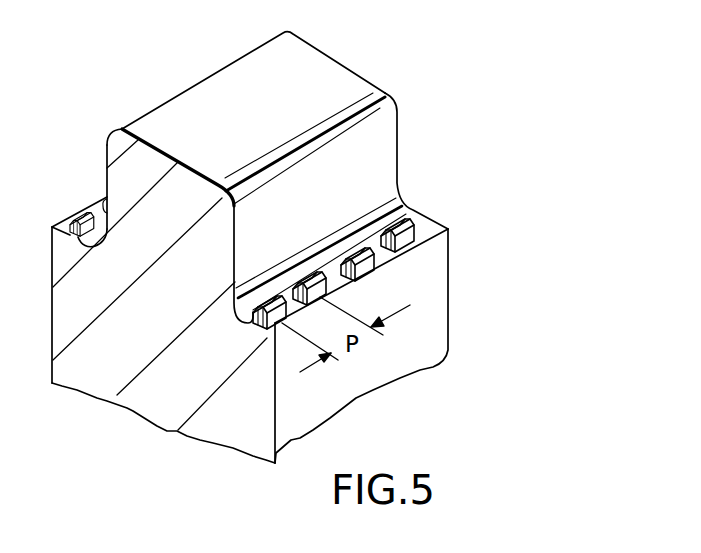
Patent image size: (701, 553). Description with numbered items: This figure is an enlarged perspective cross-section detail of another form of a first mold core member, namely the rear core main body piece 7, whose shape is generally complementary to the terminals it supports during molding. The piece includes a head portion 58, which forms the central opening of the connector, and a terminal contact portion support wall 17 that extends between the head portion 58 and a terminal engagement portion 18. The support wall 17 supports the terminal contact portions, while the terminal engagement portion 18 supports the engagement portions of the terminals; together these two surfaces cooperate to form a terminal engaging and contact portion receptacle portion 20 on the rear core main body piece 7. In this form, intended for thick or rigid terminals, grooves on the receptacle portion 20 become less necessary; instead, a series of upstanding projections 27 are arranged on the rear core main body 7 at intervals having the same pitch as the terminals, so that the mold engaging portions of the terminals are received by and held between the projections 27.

The rear core main body piece 7 is at (268, 161).
The terminal contact portion support wall 17 is at (386, 153).
The terminal engagement portion 18 is at (443, 224).
The terminal engaging and contact portion receptacle portion 20 is at (378, 227).
The upstanding projection 27 is at (72, 224).
The head portion 58 is at (296, 67).